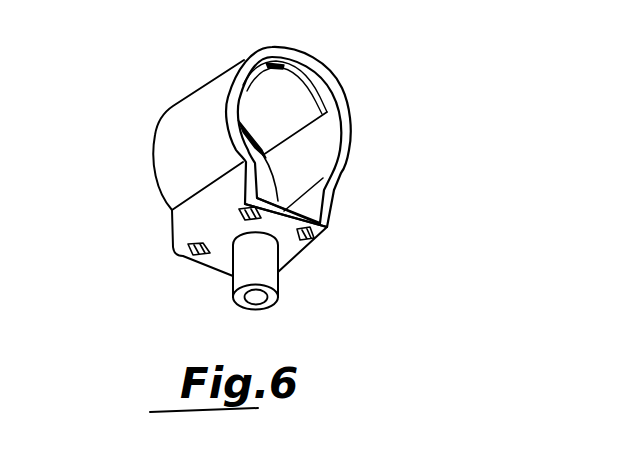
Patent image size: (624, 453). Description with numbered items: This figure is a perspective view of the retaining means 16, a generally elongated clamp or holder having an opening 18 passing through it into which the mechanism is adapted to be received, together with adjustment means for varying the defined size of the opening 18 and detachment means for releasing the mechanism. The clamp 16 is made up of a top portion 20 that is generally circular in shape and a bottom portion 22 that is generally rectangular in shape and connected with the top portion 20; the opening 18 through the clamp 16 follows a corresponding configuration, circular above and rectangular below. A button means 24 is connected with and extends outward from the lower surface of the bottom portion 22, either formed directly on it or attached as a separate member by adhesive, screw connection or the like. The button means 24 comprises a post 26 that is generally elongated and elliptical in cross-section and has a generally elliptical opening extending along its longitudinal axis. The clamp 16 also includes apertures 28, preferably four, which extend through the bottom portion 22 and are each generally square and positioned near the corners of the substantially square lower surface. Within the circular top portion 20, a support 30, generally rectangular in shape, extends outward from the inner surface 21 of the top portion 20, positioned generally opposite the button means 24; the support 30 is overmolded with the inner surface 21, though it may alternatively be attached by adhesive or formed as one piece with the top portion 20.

The retaining means 16 is at (250, 182).
The opening 18 is at (287, 110).
The top portion 20 is at (157, 135).
The inner surface 21 is at (334, 123).
The bottom portion 22 is at (333, 207).
The button means 24 is at (285, 290).
The post 26 is at (253, 303).
The aperture 28 is at (195, 257).
The support 30 is at (292, 72).